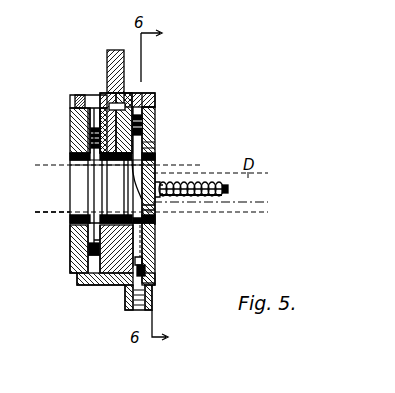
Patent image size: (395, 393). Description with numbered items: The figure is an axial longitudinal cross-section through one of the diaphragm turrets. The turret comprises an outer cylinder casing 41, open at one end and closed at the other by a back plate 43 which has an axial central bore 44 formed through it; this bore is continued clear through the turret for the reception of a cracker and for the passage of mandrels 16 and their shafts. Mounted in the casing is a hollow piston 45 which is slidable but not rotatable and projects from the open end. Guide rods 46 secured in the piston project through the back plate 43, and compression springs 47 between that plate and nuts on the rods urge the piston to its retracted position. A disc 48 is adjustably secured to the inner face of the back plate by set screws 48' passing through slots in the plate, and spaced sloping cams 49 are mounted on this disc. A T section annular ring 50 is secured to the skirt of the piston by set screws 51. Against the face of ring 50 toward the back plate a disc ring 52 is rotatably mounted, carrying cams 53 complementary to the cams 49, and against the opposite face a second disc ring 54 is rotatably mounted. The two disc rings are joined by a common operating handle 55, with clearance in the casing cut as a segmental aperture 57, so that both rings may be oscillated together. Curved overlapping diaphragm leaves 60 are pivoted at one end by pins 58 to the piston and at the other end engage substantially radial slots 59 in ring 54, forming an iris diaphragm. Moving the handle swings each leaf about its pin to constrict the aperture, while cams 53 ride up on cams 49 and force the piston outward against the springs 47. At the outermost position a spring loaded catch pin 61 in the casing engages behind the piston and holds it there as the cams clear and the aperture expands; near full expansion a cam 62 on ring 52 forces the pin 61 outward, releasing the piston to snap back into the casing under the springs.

The mandrel 16 is at (40, 213).
The outer cylinder casing 41 is at (152, 94).
The back plate 43 is at (155, 110).
The axial central bore 44 is at (153, 143).
The hollow piston 45 is at (69, 111).
The guide rod 46 is at (226, 190).
The compression spring 47 is at (193, 194).
The disc 48 is at (188, 171).
The set screw 48' is at (165, 121).
The sloping cam 49 is at (143, 186).
The T section annular ring 50 is at (145, 255).
The set screw 51 is at (72, 263).
The disc ring 52 is at (130, 245).
The cam 53 is at (153, 214).
The second disc ring 54 is at (70, 153).
The operating handle 55 is at (117, 50).
The segmental aperture 57 is at (82, 96).
The pin 58 is at (73, 136).
The radial slot 59 is at (73, 235).
The diaphragm leaf 60 is at (92, 173).
The spring loaded catch pin 61 is at (146, 272).
The cam 62 is at (140, 240).